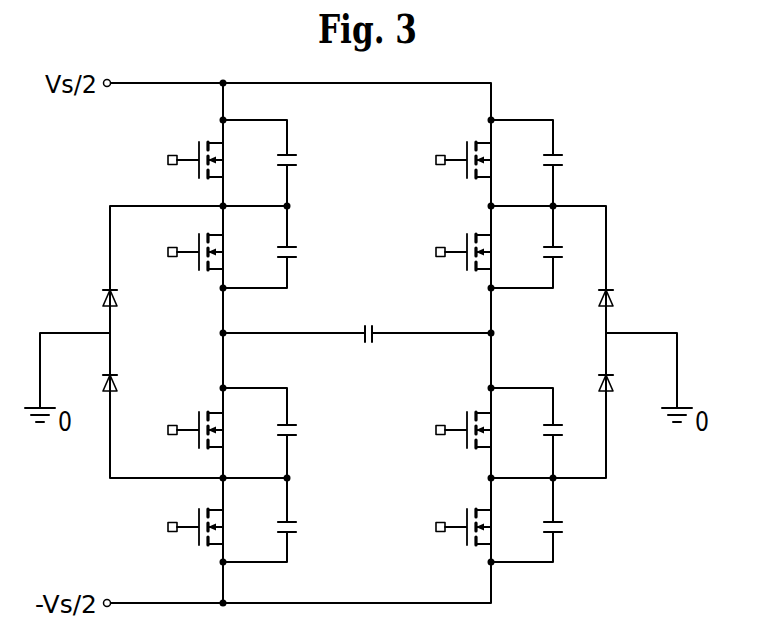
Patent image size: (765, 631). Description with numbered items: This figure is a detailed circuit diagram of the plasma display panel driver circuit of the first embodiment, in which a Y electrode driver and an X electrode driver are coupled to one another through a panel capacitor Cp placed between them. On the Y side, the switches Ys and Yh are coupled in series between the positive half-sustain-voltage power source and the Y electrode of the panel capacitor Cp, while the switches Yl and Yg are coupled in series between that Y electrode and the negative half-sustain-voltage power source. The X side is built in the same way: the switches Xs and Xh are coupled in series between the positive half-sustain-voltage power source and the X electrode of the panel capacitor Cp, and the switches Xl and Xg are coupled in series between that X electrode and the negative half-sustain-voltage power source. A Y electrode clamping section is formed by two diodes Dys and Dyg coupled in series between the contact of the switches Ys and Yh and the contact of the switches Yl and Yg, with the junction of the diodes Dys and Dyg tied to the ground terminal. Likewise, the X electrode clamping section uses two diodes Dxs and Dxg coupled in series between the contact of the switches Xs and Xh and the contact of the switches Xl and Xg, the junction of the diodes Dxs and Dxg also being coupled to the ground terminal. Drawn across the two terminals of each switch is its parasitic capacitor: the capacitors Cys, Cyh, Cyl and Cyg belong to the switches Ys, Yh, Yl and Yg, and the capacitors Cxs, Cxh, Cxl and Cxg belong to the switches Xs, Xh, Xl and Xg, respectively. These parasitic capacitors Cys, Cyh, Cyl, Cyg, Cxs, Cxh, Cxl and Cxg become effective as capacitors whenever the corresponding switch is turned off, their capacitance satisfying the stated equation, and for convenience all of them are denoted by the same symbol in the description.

The switch Ys is at (210, 160).
The switch Yh is at (210, 252).
The switch Yl is at (209, 430).
The switch Yg is at (210, 527).
The switch Xs is at (478, 160).
The switch Xh is at (478, 252).
The switch Xl is at (477, 430).
The switch Xg is at (478, 527).
The parasitic capacitor Cys is at (281, 163).
The parasitic capacitor Cyh is at (281, 247).
The parasitic capacitor Cyl is at (280, 433).
The parasitic capacitor Cyg is at (281, 520).
The parasitic capacitor Cxs is at (548, 163).
The parasitic capacitor Cxh is at (548, 247).
The parasitic capacitor Cxl is at (547, 433).
The parasitic capacitor Cxg is at (548, 520).
The panel capacitor Cp is at (357, 319).
The diode Dys is at (133, 299).
The diode Dyg is at (133, 384).
The diode Dxs is at (628, 299).
The diode Dxg is at (628, 384).